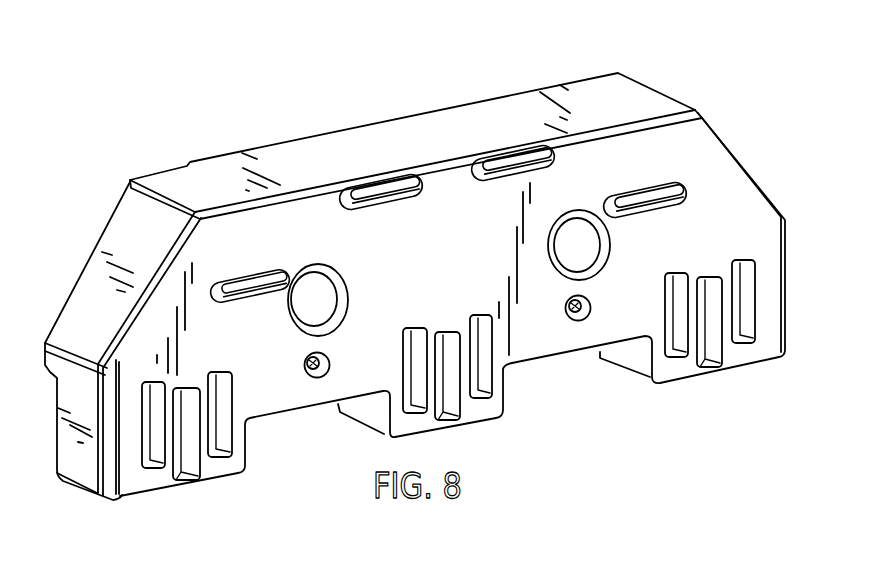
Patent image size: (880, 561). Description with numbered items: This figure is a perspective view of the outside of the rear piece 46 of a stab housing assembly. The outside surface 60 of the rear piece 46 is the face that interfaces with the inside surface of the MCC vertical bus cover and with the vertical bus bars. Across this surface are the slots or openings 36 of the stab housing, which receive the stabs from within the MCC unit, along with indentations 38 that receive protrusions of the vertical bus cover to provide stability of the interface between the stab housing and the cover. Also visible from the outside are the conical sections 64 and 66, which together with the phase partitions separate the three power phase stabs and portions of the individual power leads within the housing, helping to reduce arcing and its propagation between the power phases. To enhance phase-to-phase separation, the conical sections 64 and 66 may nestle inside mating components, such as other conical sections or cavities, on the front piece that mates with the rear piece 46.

The rear piece 46 is at (694, 62).
The outside surface 60 is at (639, 171).
The conical section 66 is at (326, 283).
The conical section 64 is at (321, 359).
The slots or openings 36 is at (155, 400).
The indentations 38 is at (185, 398).